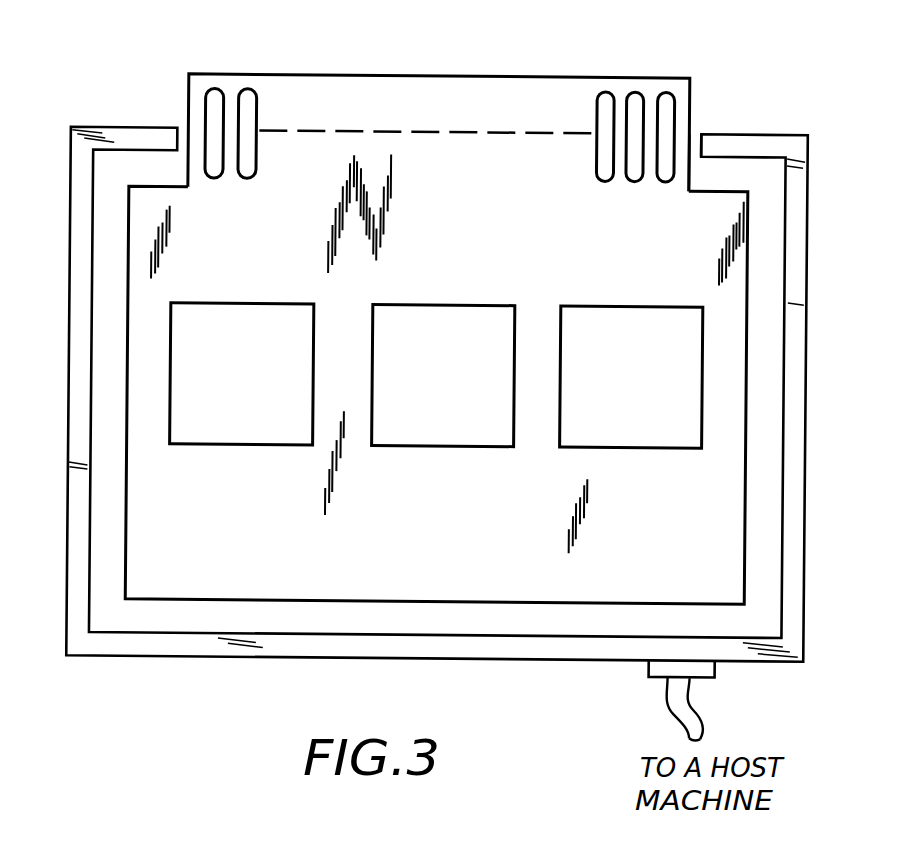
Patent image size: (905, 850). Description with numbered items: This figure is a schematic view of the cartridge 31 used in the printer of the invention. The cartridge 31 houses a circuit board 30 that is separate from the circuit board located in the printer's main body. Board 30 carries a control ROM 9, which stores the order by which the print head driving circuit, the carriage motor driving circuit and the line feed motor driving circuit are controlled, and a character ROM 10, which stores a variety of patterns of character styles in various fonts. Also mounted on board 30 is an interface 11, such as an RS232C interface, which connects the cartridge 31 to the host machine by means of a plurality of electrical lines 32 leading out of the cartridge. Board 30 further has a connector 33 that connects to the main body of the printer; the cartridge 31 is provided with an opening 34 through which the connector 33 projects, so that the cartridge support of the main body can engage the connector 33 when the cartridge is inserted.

The control ROM 9 is at (250, 435).
The character ROM 10 is at (459, 439).
The interface 11 is at (622, 437).
The circuit board 30 is at (165, 590).
The cartridge 31 is at (75, 387).
The electrical lines 32 is at (697, 713).
The connector 33 is at (648, 88).
The opening 34 is at (694, 135).